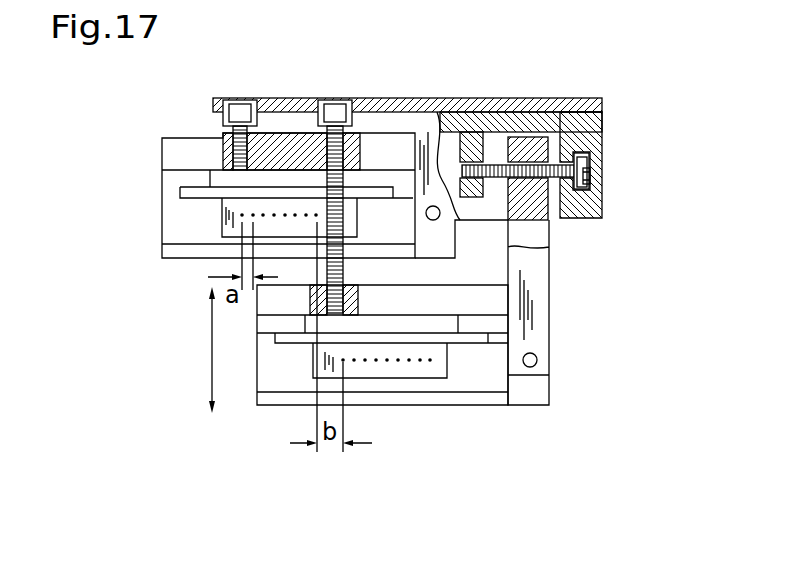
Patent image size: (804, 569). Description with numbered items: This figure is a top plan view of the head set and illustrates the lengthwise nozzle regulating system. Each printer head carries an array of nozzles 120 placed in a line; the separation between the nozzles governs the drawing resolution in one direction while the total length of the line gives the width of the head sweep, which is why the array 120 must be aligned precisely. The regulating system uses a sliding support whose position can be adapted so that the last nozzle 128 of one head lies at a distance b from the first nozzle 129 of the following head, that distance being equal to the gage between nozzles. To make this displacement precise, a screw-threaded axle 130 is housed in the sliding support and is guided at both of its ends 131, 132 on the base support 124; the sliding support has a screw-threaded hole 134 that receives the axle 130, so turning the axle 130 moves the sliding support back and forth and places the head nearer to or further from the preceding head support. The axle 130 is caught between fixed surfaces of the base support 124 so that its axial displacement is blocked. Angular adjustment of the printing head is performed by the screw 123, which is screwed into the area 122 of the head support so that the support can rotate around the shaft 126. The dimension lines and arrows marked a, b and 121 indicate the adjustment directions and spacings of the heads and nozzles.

The array of nozzles 120 is at (264, 272).
The adjustment directions of lower carriage 121 is at (382, 398).
The screwed area 122 is at (117, 246).
The screw 123 is at (248, 112).
The base support 124 is at (381, 103).
The shaft 126 is at (433, 193).
The last nozzle 128 is at (310, 228).
The first nozzle 129 is at (354, 366).
The screw-threaded axle 130 is at (590, 178).
The guided end 131 is at (468, 150).
The guided end 132 is at (569, 150).
The screw-threaded hole 134 is at (525, 150).